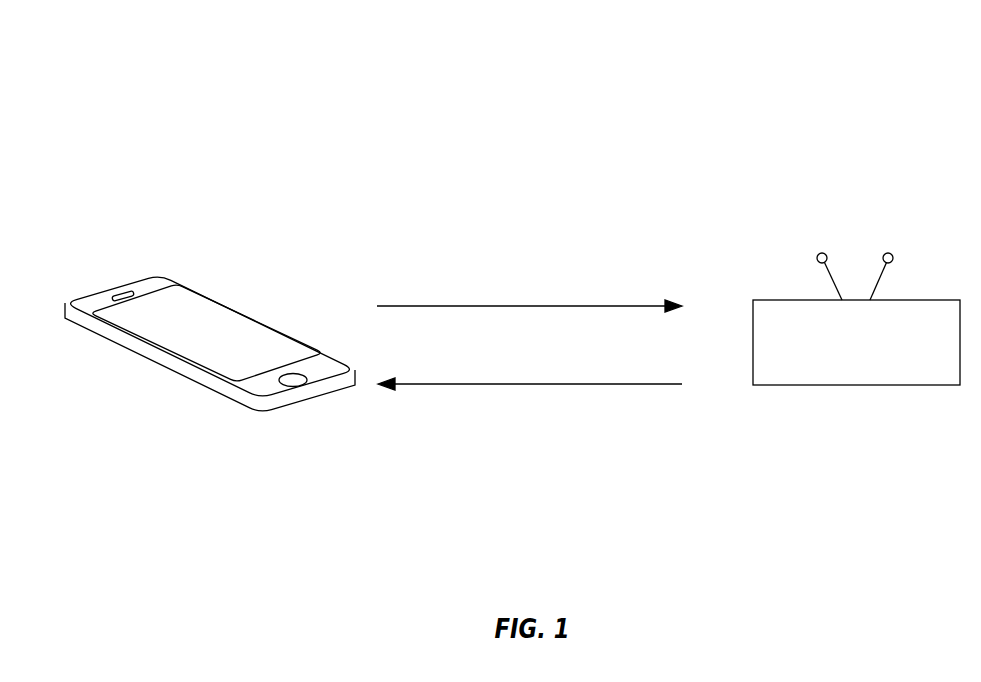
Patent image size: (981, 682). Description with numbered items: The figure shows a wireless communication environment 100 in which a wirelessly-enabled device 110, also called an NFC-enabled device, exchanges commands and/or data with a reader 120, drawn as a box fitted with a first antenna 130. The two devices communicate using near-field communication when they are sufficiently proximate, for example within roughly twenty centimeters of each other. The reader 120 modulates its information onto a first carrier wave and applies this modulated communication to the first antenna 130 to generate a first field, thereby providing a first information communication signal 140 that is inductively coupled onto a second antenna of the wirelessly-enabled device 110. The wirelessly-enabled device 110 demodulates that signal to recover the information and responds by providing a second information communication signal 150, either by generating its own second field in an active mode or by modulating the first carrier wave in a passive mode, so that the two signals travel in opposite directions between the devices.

The wireless communication environment 100 is at (431, 131).
The wirelessly-enabled device 110 is at (180, 283).
The reader 120 is at (856, 342).
The first antenna 130 is at (882, 280).
The first information communication signal 140 is at (546, 384).
The second information communication signal 150 is at (527, 306).